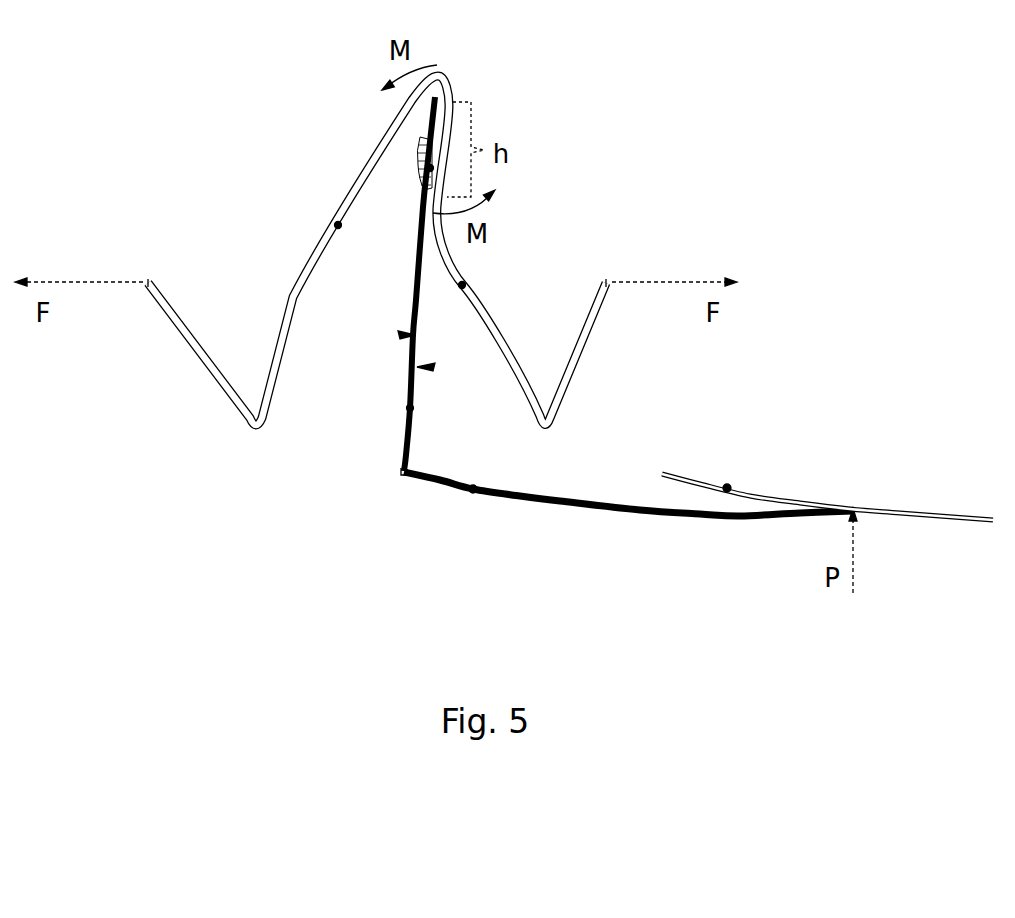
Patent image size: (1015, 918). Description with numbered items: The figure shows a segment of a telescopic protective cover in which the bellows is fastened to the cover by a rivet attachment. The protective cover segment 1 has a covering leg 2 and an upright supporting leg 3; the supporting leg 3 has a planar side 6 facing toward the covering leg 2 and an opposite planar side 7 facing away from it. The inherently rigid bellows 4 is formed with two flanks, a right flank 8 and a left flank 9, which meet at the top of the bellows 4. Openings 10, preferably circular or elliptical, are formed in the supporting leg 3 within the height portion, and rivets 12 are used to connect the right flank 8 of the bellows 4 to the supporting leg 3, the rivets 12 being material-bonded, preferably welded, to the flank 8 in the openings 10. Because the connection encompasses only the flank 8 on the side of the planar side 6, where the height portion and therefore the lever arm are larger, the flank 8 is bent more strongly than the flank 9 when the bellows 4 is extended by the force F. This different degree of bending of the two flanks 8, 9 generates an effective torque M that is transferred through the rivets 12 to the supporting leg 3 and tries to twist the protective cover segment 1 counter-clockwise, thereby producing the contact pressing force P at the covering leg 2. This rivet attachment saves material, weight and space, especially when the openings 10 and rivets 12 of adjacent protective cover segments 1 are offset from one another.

The protective cover segment 1 is at (456, 566).
The covering leg 2 is at (474, 486).
The supporting leg 3 is at (410, 408).
The bellows 4 is at (214, 400).
The planar side 6 is at (434, 367).
The planar side 7 is at (400, 335).
The flank 8 is at (462, 285).
The flank 9 is at (338, 225).
The opening 10 is at (432, 168).
The rivet 12 is at (405, 155).